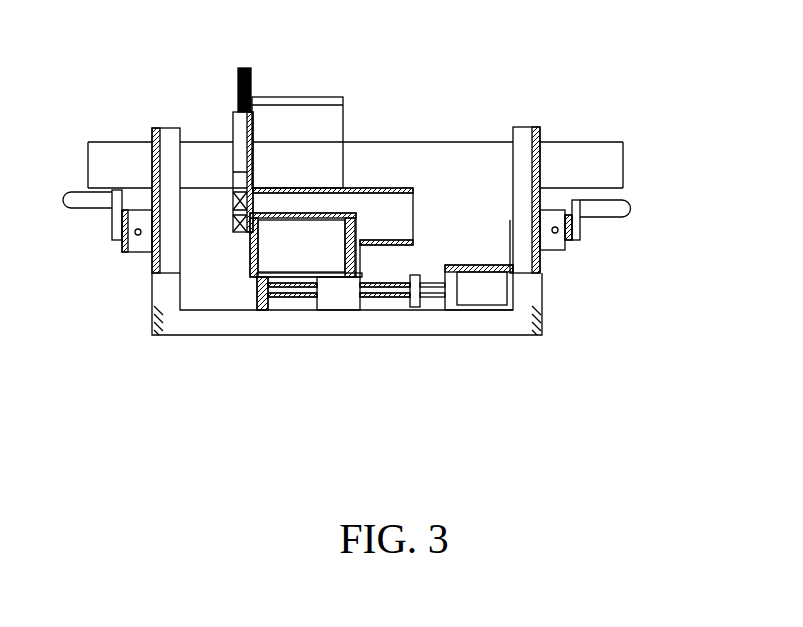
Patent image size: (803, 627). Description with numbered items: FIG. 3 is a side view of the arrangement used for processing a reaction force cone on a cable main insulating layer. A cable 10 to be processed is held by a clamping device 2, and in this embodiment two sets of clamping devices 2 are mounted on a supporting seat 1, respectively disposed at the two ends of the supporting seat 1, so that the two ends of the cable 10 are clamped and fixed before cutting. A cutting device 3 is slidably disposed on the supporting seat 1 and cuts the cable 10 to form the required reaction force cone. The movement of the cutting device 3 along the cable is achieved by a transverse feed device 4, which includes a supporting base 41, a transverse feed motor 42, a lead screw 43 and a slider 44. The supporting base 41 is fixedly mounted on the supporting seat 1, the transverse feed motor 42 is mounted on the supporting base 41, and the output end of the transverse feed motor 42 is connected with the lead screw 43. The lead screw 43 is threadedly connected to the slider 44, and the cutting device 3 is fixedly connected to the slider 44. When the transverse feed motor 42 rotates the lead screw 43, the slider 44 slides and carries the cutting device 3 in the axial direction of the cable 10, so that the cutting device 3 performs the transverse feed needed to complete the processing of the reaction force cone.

The supporting seat 1 is at (178, 322).
The clamping device 2 is at (167, 133).
The cutting device 3 is at (270, 95).
The cable 10 is at (378, 155).
The transverse feed device 4 is at (379, 340).
The supporting base 41 is at (267, 292).
The transverse feed motor 42 is at (477, 297).
The lead screw 43 is at (398, 288).
The slider 44 is at (332, 300).